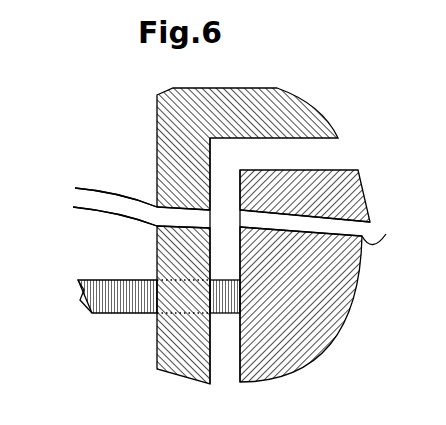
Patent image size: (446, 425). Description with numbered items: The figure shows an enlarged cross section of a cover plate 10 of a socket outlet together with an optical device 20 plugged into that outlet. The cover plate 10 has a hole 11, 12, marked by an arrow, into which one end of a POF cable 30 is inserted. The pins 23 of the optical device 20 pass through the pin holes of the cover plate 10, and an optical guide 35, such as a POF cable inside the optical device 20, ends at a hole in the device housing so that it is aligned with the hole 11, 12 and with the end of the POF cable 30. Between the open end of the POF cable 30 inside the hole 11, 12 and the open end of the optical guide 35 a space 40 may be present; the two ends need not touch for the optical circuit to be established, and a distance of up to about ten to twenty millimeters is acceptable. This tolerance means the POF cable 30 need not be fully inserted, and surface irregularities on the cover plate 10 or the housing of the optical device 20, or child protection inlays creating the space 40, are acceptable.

The cover plate 10 is at (157, 337).
The hole 11 is at (147, 195).
The hole 12 is at (147, 195).
The optical device 20 is at (326, 312).
The pins 23 is at (83, 294).
The POF cable 30 is at (93, 205).
The optical guide 35 is at (386, 234).
The space 40 is at (226, 185).